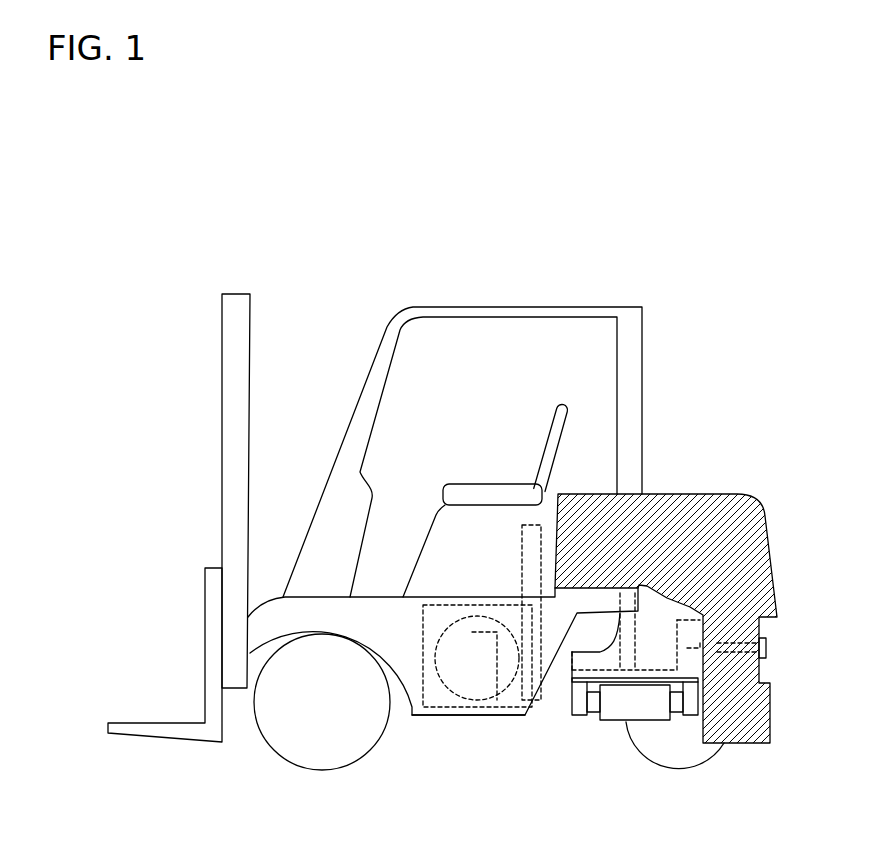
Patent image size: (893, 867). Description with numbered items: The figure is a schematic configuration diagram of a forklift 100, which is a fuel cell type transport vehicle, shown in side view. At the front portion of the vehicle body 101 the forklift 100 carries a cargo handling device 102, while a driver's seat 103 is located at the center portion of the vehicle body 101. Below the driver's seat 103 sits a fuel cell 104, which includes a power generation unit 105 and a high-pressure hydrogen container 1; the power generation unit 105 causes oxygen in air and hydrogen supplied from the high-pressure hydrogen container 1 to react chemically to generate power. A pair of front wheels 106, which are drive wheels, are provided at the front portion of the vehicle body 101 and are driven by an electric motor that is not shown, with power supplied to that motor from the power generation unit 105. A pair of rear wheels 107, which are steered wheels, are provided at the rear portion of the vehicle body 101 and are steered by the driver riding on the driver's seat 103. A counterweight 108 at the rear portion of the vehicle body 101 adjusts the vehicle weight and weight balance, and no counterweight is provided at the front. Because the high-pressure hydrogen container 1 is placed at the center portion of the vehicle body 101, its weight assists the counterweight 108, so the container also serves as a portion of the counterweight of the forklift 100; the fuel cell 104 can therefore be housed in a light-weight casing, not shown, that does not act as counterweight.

The forklift 100 is at (595, 283).
The vehicle body 101 is at (647, 387).
The cargo handling device 102 is at (165, 723).
The driver's seat 103 is at (510, 480).
The counterweight 108 is at (683, 493).
The high-pressure hydrogen container 1 is at (447, 697).
The power generation unit 105 is at (533, 693).
The fuel cell 104 is at (507, 724).
The front wheels 106 is at (320, 772).
The rear wheels 107 is at (690, 772).